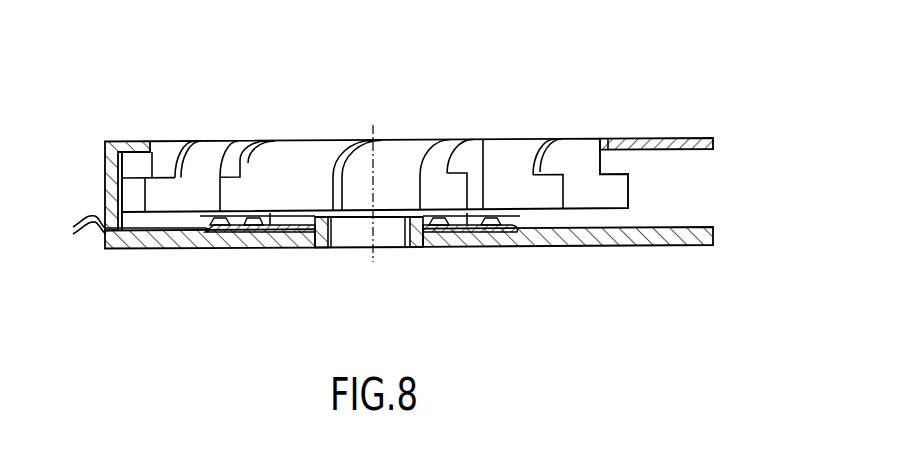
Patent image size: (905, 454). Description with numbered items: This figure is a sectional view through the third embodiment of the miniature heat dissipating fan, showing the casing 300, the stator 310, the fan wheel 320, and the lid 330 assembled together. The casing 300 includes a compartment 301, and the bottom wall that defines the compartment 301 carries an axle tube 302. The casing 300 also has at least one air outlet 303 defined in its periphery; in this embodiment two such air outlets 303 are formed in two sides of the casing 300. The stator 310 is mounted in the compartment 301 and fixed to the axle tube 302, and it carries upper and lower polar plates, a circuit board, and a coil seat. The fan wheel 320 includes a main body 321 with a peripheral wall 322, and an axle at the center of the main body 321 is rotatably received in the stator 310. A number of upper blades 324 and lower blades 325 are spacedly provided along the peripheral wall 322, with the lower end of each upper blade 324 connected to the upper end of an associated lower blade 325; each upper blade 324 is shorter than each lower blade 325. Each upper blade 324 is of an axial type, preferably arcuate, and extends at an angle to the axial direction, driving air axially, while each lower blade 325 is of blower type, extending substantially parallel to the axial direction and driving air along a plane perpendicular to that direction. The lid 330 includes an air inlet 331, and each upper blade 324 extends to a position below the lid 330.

The casing 300 is at (625, 244).
The compartment 301 is at (155, 255).
The axle tube 302 is at (313, 252).
The air outlet 303 is at (706, 167).
The stator 310 is at (447, 232).
The fan wheel 320 is at (442, 99).
The main body 321 is at (336, 140).
The peripheral wall 322 is at (402, 137).
The upper blade 324 is at (532, 137).
The lower blade 325 is at (528, 188).
The lid 330 is at (118, 140).
The air inlet 331 is at (606, 138).